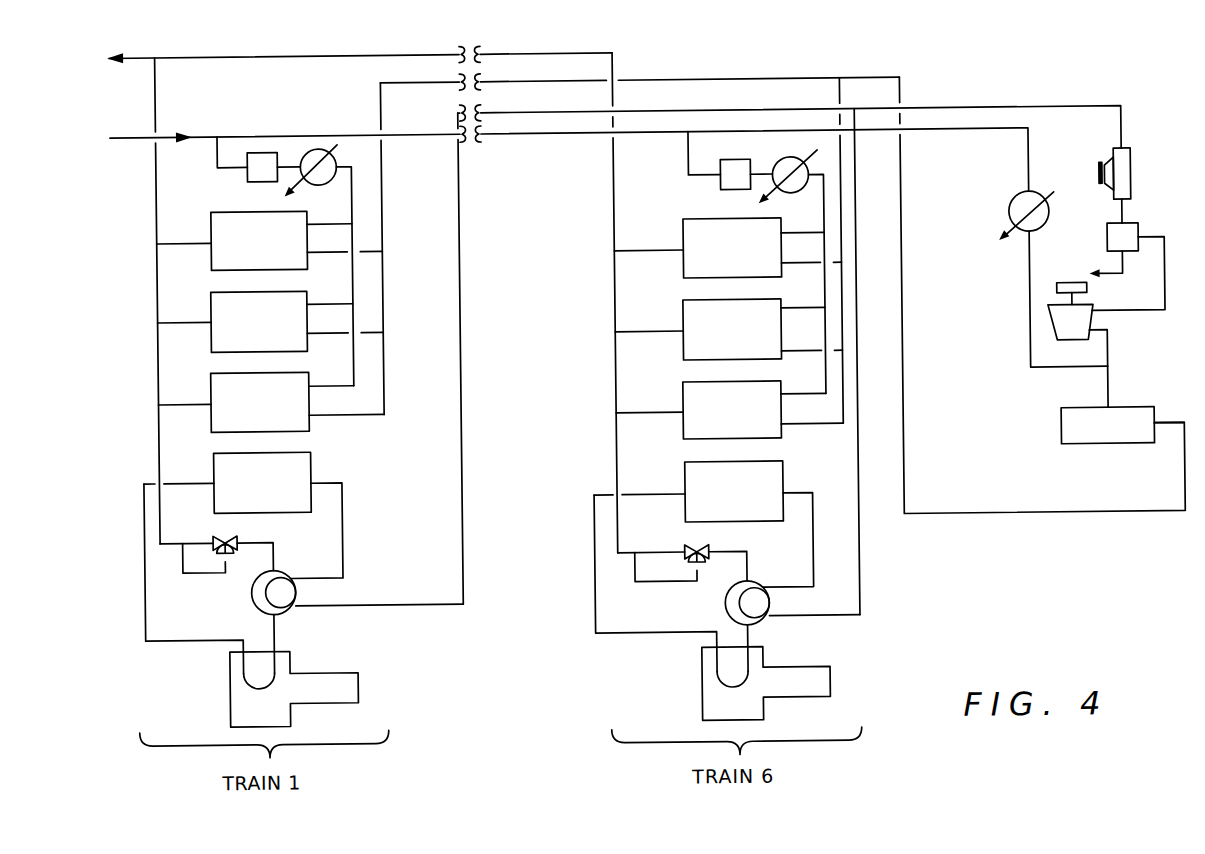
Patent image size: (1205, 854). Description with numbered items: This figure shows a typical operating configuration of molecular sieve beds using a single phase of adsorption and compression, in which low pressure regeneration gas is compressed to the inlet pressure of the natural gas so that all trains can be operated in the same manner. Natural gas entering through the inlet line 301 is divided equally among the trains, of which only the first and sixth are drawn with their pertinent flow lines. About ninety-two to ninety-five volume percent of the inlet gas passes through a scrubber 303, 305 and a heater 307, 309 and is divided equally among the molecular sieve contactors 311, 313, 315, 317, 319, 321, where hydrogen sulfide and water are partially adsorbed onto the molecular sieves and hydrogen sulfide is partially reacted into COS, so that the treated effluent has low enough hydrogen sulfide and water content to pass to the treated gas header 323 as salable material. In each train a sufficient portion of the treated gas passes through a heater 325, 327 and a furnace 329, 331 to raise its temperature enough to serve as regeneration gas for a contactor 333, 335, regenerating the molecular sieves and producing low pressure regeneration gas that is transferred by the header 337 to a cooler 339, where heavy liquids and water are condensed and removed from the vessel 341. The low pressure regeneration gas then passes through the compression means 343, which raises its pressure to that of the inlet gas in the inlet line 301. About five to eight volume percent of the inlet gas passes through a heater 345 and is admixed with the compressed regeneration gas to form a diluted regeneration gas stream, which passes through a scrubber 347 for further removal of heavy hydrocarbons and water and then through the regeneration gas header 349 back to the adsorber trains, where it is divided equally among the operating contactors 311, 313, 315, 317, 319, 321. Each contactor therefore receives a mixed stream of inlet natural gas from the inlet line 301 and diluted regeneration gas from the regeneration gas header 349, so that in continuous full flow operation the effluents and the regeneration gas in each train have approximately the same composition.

The inlet line 301 is at (126, 139).
The scrubber 303 is at (245, 183).
The scrubber 305 is at (720, 192).
The heater 307 is at (322, 188).
The heater 309 is at (778, 168).
The molecular sieve contactor 311 is at (210, 218).
The molecular sieve contactor 313 is at (209, 298).
The molecular sieve contactor 315 is at (208, 379).
The molecular sieve contactor 317 is at (682, 227).
The molecular sieve contactor 319 is at (681, 308).
The molecular sieve contactor 321 is at (680, 390).
The treated gas header 323 is at (238, 59).
The heater 325 is at (250, 600).
The heater 327 is at (720, 612).
The furnace 329 is at (328, 675).
The furnace 331 is at (791, 674).
The contactor 333 is at (210, 460).
The contactor 335 is at (681, 470).
The header 337 is at (786, 116).
The cooler 339 is at (1130, 180).
The vessel 341 is at (1106, 250).
The compression means 343 is at (1092, 315).
The heater 345 is at (1048, 218).
The scrubber 347 is at (1092, 454).
The regeneration gas header 349 is at (763, 85).